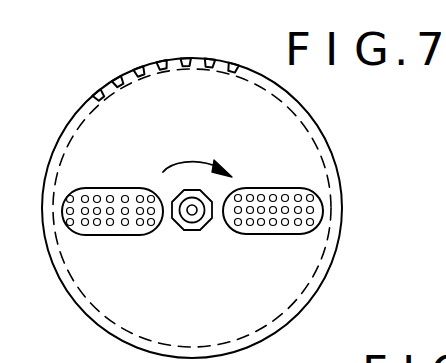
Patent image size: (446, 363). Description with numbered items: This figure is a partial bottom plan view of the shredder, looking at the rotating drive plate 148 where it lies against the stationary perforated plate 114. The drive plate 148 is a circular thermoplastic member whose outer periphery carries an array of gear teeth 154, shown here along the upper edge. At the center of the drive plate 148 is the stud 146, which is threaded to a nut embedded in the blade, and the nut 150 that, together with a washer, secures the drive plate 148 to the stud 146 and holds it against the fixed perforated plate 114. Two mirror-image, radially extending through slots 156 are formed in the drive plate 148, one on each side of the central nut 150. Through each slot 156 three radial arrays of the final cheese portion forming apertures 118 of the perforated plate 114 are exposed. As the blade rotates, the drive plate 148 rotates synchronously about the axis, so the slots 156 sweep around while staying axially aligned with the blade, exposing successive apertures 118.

The perforated plate 114 is at (252, 198).
The final cheese portion forming apertures 118 is at (290, 195).
The stud 146 is at (191, 209).
The drive plate 148 is at (306, 278).
The nut 150 is at (195, 230).
The gear teeth 154 is at (169, 63).
The through slots 156 is at (233, 215).